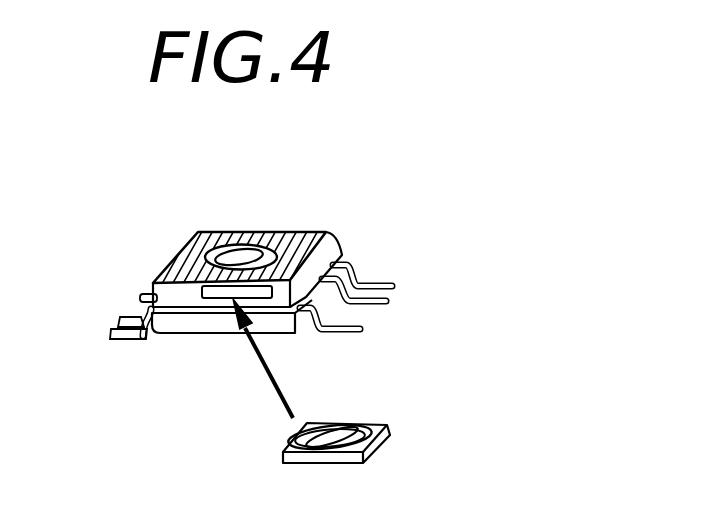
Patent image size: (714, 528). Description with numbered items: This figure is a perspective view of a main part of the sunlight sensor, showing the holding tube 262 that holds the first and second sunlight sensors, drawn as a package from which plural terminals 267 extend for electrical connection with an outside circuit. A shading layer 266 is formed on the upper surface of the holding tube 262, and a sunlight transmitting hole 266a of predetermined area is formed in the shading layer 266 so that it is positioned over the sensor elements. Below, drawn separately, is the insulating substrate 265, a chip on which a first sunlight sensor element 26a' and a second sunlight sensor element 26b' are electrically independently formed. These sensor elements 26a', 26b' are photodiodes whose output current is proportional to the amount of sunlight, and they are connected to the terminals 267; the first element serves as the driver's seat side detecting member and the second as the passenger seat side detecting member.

The holding tube 262 is at (327, 248).
The insulating substrate 265 is at (217, 288).
The shading layer 266 is at (308, 235).
The sunlight transmitting hole 266a is at (250, 243).
The terminals 267 is at (392, 289).
The first sunlight sensor element 26a' is at (276, 436).
The second sunlight sensor element 26b' is at (384, 405).